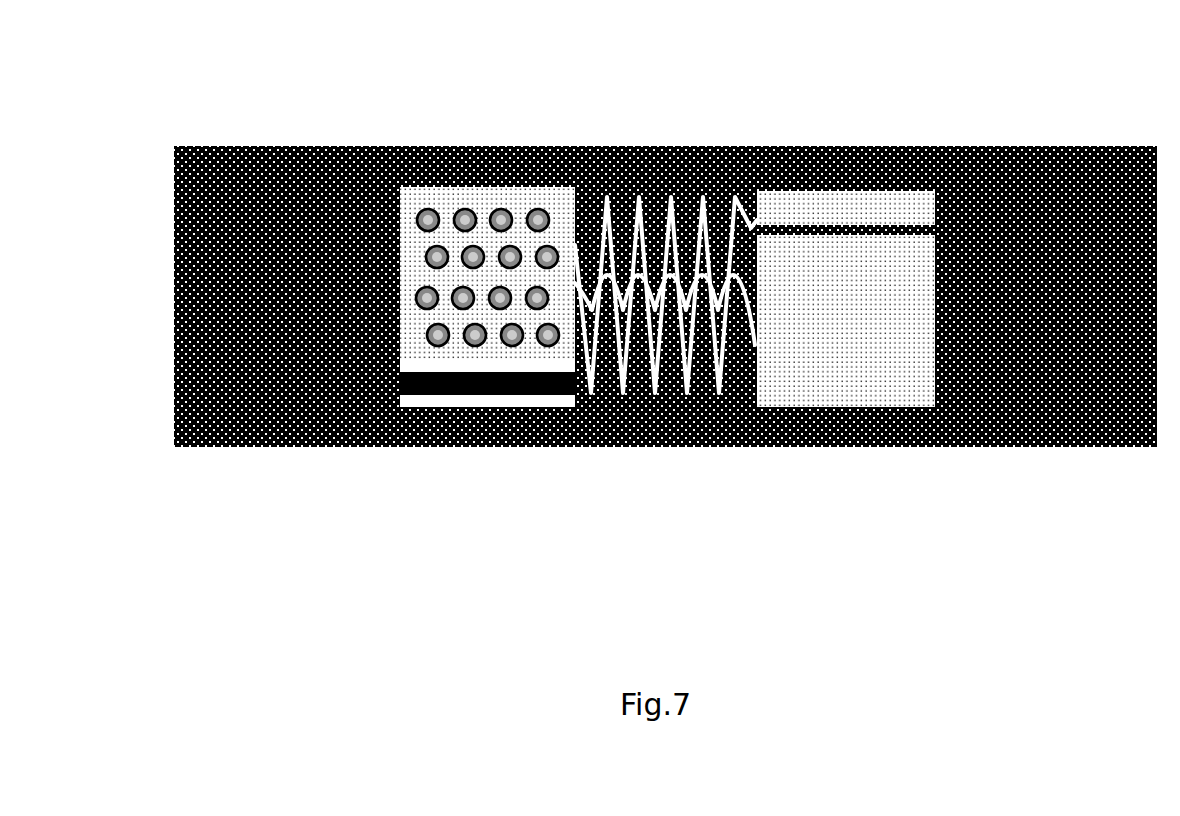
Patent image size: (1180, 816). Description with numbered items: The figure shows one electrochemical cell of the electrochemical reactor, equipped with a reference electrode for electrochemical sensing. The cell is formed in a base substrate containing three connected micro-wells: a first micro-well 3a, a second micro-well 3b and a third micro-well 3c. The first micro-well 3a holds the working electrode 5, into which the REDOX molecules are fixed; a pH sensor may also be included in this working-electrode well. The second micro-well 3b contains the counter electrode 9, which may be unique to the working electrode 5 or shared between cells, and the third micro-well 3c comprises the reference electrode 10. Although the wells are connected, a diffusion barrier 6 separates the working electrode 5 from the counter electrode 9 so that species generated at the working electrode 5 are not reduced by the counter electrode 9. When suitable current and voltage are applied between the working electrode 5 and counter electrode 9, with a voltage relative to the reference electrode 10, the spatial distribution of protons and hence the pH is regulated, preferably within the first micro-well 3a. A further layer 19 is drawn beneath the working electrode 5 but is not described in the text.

The first micro-well 3a is at (490, 258).
The second micro-well 3b is at (862, 268).
The third micro-well 3c is at (855, 207).
The working electrode 5 is at (566, 258).
The diffusion barrier 6 is at (665, 275).
The counter electrode 9 is at (846, 321).
The reference electrode 10 is at (828, 207).
The conductive plate 19 is at (498, 404).